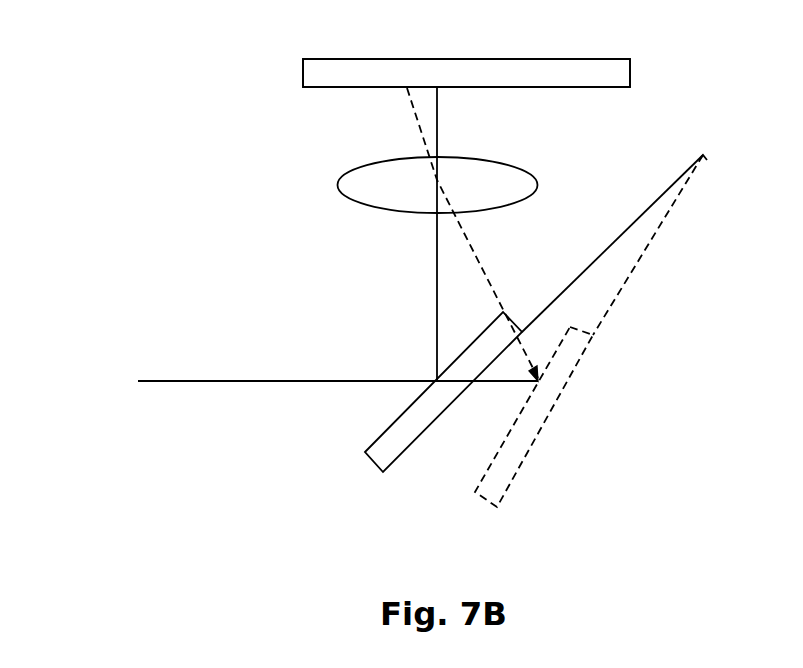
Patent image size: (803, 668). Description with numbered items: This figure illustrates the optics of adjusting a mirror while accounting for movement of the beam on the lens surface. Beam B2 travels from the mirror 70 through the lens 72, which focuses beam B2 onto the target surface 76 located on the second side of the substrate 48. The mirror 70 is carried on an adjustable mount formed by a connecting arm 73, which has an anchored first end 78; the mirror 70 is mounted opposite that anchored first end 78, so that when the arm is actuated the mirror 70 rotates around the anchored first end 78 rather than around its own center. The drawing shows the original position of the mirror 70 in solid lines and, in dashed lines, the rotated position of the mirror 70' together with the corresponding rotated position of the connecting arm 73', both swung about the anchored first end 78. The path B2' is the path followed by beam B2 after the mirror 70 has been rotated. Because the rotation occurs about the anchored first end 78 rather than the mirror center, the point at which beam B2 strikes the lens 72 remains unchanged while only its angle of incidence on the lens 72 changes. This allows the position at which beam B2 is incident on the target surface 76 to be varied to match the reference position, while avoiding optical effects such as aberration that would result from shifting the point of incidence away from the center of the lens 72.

The substrate 48 is at (632, 75).
The target surface 76 is at (318, 88).
The beam B2 is at (341, 277).
The lens 72 is at (350, 203).
The path of beam B2 after mirror rotation B2' is at (504, 234).
The mirror 70 is at (392, 401).
The rotated position of mirror 70' is at (475, 429).
The connecting arm 73 is at (622, 249).
The rotated position of connecting arm 73' is at (672, 245).
The anchored first end 78 is at (706, 158).